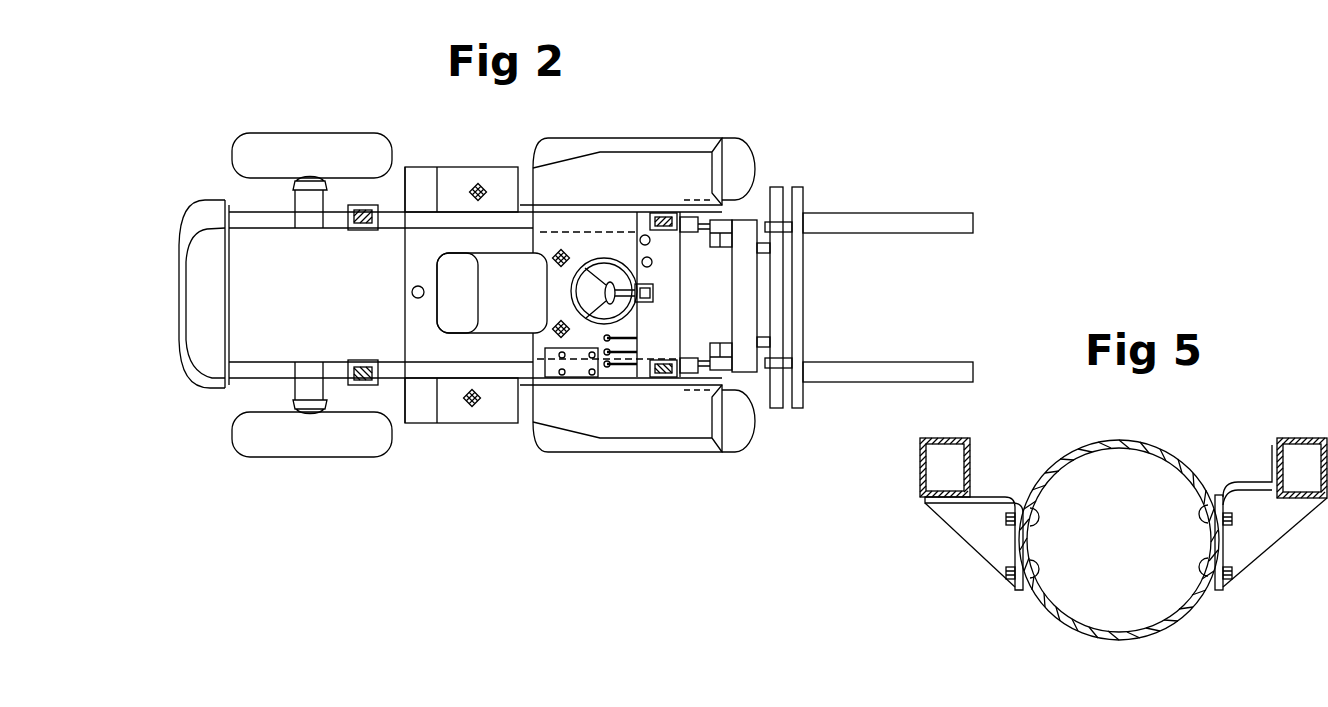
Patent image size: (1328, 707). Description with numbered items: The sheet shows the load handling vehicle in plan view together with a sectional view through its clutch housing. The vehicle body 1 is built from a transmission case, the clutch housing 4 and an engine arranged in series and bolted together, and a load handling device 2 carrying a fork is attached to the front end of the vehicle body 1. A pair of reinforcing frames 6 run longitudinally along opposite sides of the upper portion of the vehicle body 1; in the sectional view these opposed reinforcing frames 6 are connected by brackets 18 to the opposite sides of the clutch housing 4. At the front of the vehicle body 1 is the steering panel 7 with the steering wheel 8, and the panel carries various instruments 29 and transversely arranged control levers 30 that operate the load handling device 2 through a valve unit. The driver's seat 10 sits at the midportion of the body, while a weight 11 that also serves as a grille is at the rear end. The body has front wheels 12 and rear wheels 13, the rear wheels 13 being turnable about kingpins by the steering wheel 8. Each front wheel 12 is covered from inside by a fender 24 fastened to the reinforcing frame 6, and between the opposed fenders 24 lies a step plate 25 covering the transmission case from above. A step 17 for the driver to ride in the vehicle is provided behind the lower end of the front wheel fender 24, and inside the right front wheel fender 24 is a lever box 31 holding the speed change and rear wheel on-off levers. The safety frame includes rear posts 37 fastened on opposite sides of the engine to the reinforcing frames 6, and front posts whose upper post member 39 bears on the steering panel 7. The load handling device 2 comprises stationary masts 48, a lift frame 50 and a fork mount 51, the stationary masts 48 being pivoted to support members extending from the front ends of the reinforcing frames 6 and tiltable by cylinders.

In FIG. 2, the vehicle body 1 is at (251, 382).
In FIG. 5, the vehicle body 1 is at (1119, 524).
In FIG. 2, the load handling device 2 is at (908, 212).
In FIG. 5, the clutch housing 4 is at (1178, 467).
In FIG. 2, the reinforcing frames 6 is at (335, 217).
In FIG. 5, the reinforcing frames 6 is at (943, 440).
In FIG. 2, the steering panel 7 is at (665, 330).
In FIG. 2, the steering wheel 8 is at (598, 262).
In FIG. 2, the driver's seat 10 is at (456, 313).
In FIG. 2, the weight 11 is at (190, 292).
In FIG. 2, the front wheels 12 is at (733, 152).
In FIG. 2, the rear wheels 13 is at (327, 148).
In FIG. 2, the step 17 is at (452, 185).
In FIG. 5, the brackets 18 is at (1018, 547).
In FIG. 2, the fender 24 is at (617, 173).
In FIG. 2, the step plate 25 is at (543, 240).
In FIG. 2, the instruments 29 is at (646, 257).
In FIG. 2, the control levers 30 is at (618, 365).
In FIG. 2, the lever box 31 is at (580, 368).
In FIG. 2, the rear posts 37 is at (372, 207).
In FIG. 2, the upper post member 39 is at (683, 218).
In FIG. 2, the stationary masts 48 is at (745, 291).
In FIG. 2, the lift frame 50 is at (785, 255).
In FIG. 2, the fork mount 51 is at (808, 300).